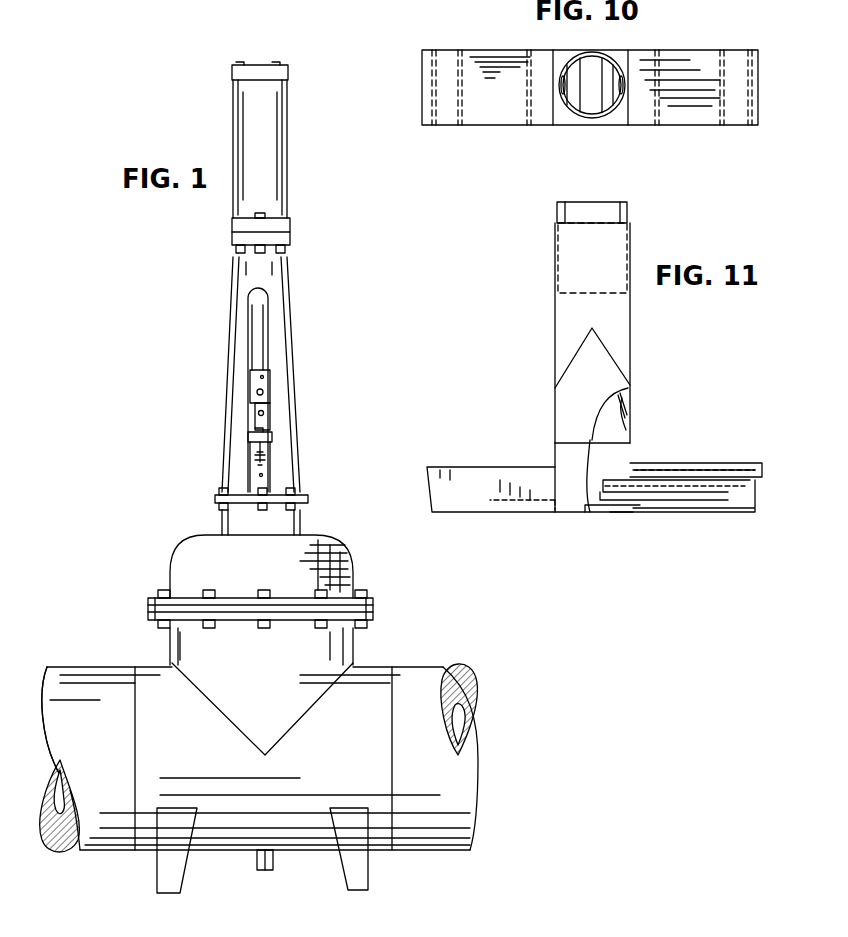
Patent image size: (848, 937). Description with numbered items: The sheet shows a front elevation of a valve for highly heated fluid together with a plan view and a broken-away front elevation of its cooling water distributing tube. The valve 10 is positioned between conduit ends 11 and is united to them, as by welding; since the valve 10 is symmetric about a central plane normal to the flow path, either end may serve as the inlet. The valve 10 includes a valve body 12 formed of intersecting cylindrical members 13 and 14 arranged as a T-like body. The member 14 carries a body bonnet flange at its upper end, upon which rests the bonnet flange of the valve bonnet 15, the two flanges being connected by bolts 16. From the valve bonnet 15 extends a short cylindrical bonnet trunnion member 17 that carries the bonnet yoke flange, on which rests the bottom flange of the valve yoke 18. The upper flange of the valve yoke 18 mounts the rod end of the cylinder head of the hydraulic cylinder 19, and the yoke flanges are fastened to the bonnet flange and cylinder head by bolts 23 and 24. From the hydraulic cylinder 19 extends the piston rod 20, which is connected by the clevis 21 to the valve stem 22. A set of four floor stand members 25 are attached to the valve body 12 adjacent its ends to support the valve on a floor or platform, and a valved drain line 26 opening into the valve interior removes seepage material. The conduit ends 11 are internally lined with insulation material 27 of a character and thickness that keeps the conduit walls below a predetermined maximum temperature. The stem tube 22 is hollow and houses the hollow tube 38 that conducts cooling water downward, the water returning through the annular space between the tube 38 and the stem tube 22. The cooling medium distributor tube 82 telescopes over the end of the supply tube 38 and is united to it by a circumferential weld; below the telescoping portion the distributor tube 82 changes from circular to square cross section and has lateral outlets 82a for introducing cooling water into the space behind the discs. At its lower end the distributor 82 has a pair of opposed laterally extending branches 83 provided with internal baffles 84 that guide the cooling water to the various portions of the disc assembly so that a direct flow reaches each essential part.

In FIG. 1, the valve 10 is at (146, 580).
In FIG. 1, the conduit ends 11 is at (470, 672).
In FIG. 1, the valve body 12 is at (140, 633).
In FIG. 1, the cylindrical member 13 is at (222, 836).
In FIG. 1, the cylindrical member 14 is at (345, 652).
In FIG. 1, the valve bonnet 15 is at (200, 555).
In FIG. 1, the bolts 16 is at (322, 590).
In FIG. 1, the bonnet trunnion member 17 is at (302, 515).
In FIG. 1, the valve yoke 18 is at (236, 326).
In FIG. 1, the hydraulic cylinder 19 is at (272, 112).
In FIG. 1, the piston rod 20 is at (262, 338).
In FIG. 1, the clevis 21 is at (256, 387).
In FIG. 1, the valve stem 22 is at (264, 419).
In FIG. 1, the bolts 23 is at (250, 488).
In FIG. 1, the bolts 24 is at (262, 216).
In FIG. 1, the floor stand members 25 is at (165, 880).
In FIG. 1, the valved drain line 26 is at (262, 874).
In FIG. 1, the insulation material 27 is at (470, 705).
In FIG. 10, the hollow tube 38 is at (570, 112).
In FIG. 11, the hollow tube 38 is at (620, 210).
In FIG. 10, the cooling medium distributor tube 82 is at (630, 126).
In FIG. 11, the cooling medium distributor tube 82 is at (553, 350).
In FIG. 11, the lateral outlets 82a is at (626, 392).
In FIG. 10, the laterally extending branches 83 is at (478, 57).
In FIG. 11, the laterally extending branches 83 is at (476, 470).
In FIG. 11, the internal baffles 84 is at (705, 508).